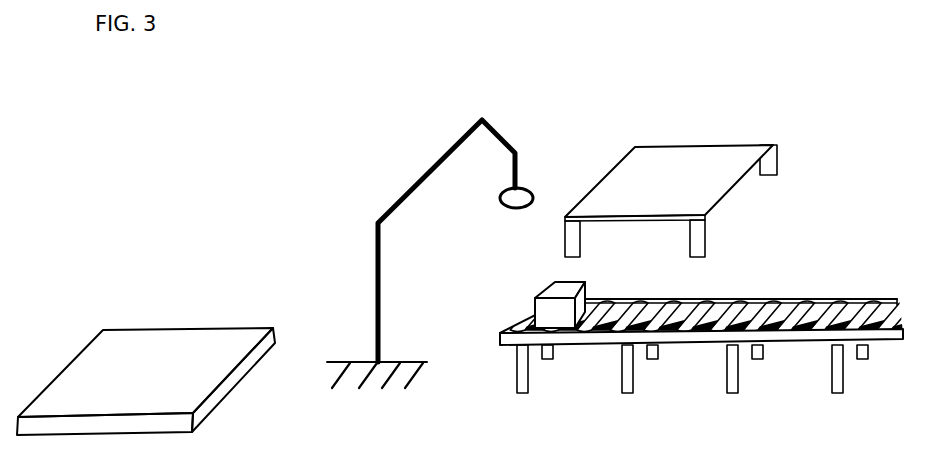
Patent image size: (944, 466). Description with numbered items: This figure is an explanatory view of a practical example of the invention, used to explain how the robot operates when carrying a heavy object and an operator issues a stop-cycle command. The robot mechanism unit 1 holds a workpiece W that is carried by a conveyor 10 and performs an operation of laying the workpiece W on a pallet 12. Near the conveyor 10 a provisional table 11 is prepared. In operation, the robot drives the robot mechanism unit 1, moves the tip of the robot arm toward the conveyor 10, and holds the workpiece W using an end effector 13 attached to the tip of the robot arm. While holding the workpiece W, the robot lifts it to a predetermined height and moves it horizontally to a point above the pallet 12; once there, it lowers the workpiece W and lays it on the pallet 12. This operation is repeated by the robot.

The robot mechanism unit 1 is at (402, 156).
The conveyor 10 is at (753, 299).
The provisional table 11 is at (665, 147).
The pallet 12 is at (143, 328).
The end effector 13 is at (533, 194).
The workpiece W is at (552, 281).